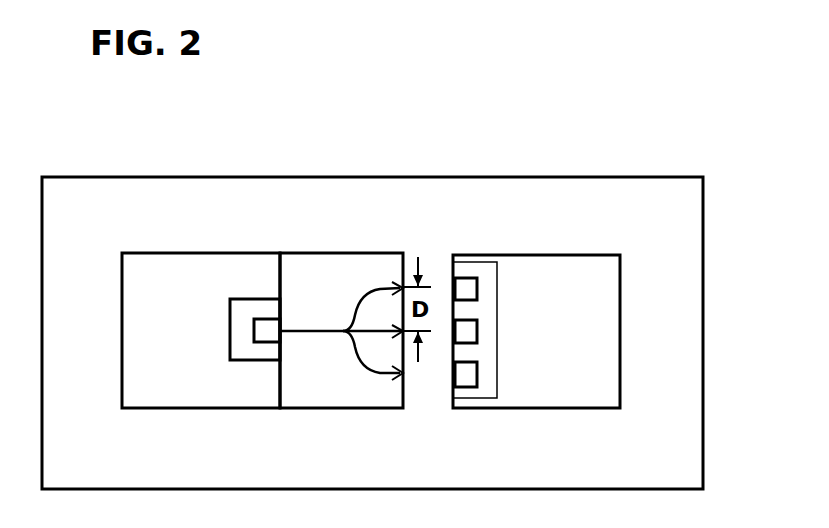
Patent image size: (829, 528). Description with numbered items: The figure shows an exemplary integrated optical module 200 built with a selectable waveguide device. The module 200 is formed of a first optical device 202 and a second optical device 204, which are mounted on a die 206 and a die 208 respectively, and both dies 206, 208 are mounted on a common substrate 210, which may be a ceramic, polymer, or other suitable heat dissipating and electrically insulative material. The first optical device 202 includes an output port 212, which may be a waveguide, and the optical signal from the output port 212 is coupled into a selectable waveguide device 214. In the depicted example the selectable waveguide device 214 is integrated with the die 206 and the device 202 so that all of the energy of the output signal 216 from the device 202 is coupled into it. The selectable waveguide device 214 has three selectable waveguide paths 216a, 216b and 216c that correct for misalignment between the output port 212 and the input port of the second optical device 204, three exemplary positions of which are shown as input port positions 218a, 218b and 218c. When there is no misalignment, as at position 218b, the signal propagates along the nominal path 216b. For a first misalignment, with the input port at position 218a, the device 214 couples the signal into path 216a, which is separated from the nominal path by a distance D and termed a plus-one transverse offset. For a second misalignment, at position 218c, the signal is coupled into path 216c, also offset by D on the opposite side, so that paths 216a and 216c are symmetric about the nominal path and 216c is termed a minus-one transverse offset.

The integrated optical module 200 is at (114, 146).
The first optical device 202 is at (238, 331).
The second optical device 204 is at (498, 368).
The die 206 is at (174, 252).
The die 208 is at (578, 255).
The substrate 210 is at (703, 372).
The output port 212 is at (270, 343).
The selectable waveguide device 214 is at (300, 252).
The output signal 216 is at (302, 326).
The selectable waveguide path 216a is at (369, 293).
The selectable waveguide path 216b is at (392, 335).
The selectable waveguide path 216c is at (365, 374).
The input port position 218a is at (478, 282).
The input port position 218b is at (478, 332).
The input port position 218c is at (468, 388).